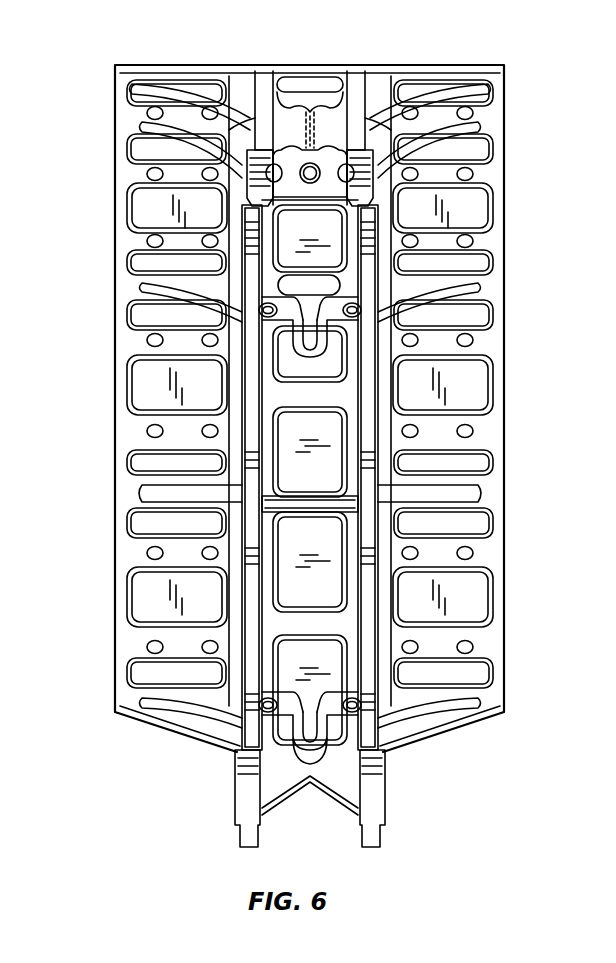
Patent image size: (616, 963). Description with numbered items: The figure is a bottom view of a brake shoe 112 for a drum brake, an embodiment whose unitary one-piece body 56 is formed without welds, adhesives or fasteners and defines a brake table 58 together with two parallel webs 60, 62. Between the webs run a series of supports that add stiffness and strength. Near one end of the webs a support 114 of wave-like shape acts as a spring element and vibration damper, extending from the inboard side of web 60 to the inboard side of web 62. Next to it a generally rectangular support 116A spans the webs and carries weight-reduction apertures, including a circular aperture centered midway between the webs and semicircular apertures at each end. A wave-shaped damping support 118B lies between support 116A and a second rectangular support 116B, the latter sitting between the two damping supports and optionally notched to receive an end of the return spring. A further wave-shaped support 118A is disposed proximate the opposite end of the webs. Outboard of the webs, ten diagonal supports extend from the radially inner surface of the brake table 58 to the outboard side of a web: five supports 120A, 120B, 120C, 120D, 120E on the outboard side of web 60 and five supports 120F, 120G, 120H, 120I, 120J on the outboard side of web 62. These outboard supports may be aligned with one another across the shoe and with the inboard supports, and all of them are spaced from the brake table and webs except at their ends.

The body 56 is at (122, 432).
The brake table 58 is at (480, 315).
The web 60 is at (247, 552).
The web 62 is at (373, 580).
The brake shoe 112 is at (150, 387).
The support 114 is at (316, 118).
The support 116A is at (330, 186).
The support 116B is at (343, 508).
The support 118A is at (318, 720).
The support 118B is at (318, 340).
The support 120A is at (212, 88).
The support 120B is at (178, 125).
The support 120C is at (170, 290).
The support 120D is at (160, 488).
The support 120E is at (172, 706).
The support 120F is at (428, 100).
The support 120G is at (448, 133).
The support 120H is at (442, 292).
The support 120I is at (460, 492).
The support 120J is at (440, 698).